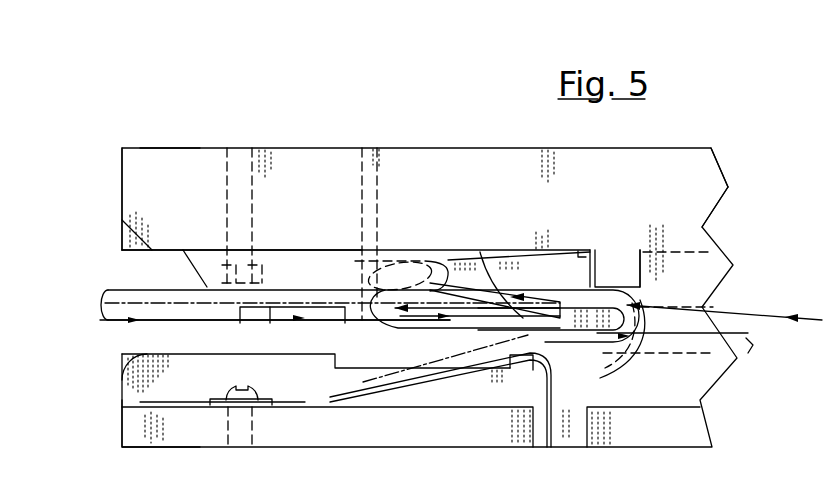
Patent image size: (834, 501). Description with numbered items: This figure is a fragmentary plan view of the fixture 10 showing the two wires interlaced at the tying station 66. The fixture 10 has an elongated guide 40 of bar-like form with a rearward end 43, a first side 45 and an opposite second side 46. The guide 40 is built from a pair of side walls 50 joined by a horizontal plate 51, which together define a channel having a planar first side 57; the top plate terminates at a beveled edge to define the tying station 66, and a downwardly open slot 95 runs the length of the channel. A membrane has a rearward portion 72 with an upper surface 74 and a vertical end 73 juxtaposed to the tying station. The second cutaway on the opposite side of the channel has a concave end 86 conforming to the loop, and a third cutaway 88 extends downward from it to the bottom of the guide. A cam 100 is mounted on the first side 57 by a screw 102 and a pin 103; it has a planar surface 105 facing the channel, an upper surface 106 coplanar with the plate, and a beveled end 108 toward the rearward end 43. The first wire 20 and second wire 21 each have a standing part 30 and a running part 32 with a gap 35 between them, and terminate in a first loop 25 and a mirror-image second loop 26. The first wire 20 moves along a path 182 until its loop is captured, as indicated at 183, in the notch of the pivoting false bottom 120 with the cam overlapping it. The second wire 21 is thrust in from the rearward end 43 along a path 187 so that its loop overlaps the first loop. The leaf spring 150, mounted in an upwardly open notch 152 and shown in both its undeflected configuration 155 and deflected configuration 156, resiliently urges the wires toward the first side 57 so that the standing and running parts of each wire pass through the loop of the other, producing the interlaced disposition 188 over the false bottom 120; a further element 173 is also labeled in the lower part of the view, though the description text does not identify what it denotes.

The fixture 10 is at (733, 170).
The first wire 20 is at (747, 345).
The second wire 21 is at (107, 318).
The first loop 25 is at (375, 328).
The second loop 26 is at (598, 370).
The standing part 30 is at (120, 298).
The running part 32 is at (518, 295).
The gap 35 is at (493, 271).
The guide 40 is at (713, 151).
The rearward end 43 is at (122, 184).
The first side 45 is at (160, 148).
The second side 46 is at (178, 447).
The side walls 50 is at (670, 194).
The horizontal plate 51 is at (683, 294).
The first side of the channel 57 is at (130, 250).
The tying station 66 is at (425, 248).
The rearward portion of the membrane 72 is at (637, 262).
The end of the membrane 73 is at (578, 257).
The upper surface 74 is at (634, 274).
The concave end 86 is at (622, 378).
The third cutaway 88 is at (378, 364).
The slot 95 is at (334, 362).
The cam 100 is at (293, 250).
The screw 102 is at (243, 171).
The pin 103 is at (372, 166).
The planar surface 105 is at (330, 318).
The upper surface of the cam 106 is at (286, 280).
The beveled end 108 is at (200, 272).
The false bottom 120 is at (275, 323).
The leaf spring 150 is at (330, 405).
The notch 152 is at (588, 445).
The undeflected configuration 155 is at (440, 370).
The deflected configuration 156 is at (472, 370).
The photodetector 173 is at (222, 398).
The path 182 is at (762, 314).
The captured position 183 is at (367, 304).
The path 187 is at (183, 322).
The interlaced disposition 188 is at (505, 284).